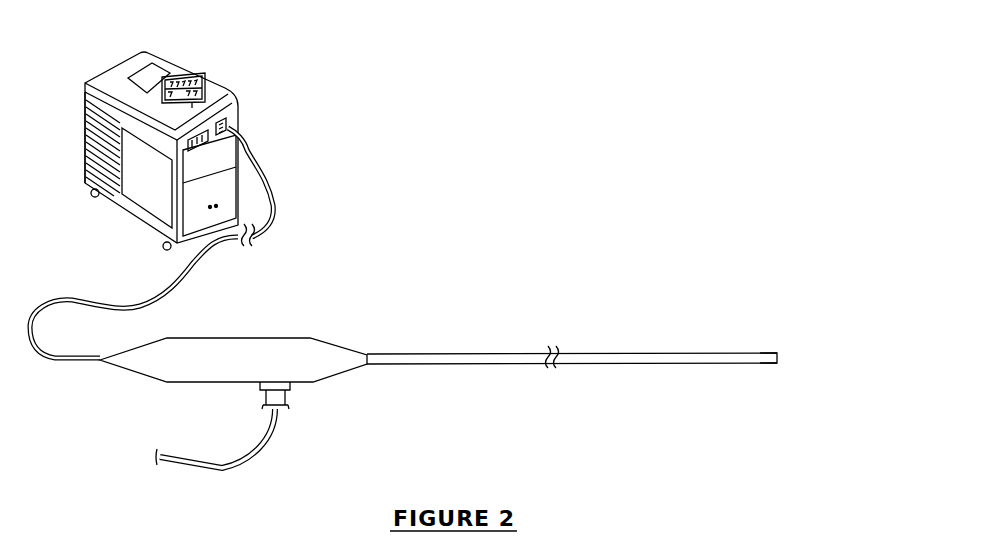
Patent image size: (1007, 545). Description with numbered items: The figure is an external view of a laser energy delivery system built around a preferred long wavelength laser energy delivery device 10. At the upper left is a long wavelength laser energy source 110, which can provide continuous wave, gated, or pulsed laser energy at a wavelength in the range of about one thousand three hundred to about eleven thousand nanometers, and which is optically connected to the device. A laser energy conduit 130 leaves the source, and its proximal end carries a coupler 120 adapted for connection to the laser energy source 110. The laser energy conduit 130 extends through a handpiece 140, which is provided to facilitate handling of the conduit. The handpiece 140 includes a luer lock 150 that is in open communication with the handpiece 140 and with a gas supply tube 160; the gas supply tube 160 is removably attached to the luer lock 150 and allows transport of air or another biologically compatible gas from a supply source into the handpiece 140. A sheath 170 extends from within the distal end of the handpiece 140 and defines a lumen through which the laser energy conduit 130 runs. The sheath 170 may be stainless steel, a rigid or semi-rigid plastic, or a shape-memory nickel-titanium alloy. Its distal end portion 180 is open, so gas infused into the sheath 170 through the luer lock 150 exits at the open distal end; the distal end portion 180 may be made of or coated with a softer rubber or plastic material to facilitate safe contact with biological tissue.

The long wavelength laser energy delivery device 10 is at (487, 378).
The long wavelength laser energy source 110 is at (165, 63).
The coupler 120 is at (236, 133).
The laser energy conduit 130 is at (275, 207).
The handpiece 140 is at (258, 355).
The luer lock 150 is at (277, 400).
The gas supply tube 160 is at (220, 468).
The sheath 170 is at (440, 352).
The distal end portion 180 is at (763, 352).